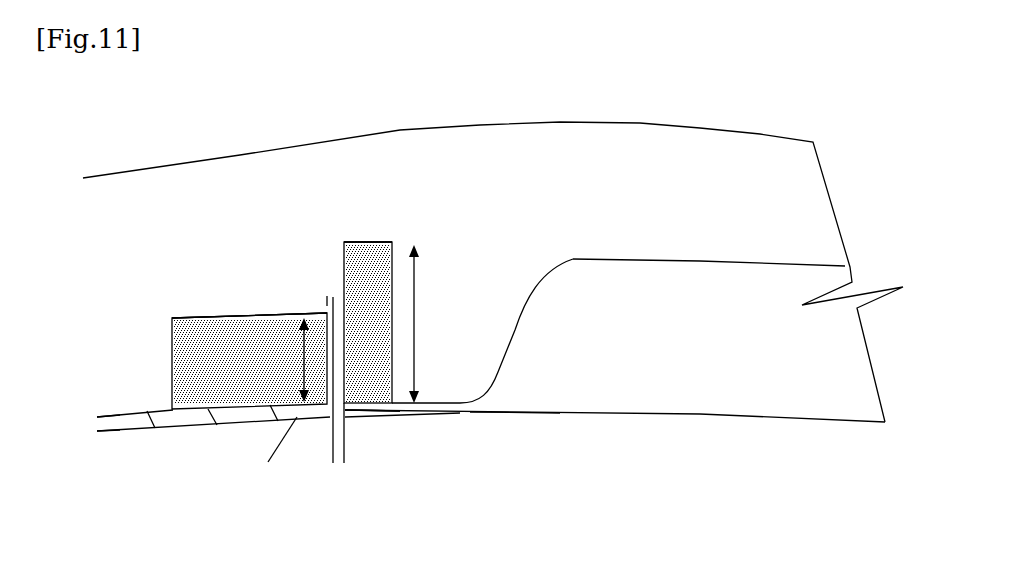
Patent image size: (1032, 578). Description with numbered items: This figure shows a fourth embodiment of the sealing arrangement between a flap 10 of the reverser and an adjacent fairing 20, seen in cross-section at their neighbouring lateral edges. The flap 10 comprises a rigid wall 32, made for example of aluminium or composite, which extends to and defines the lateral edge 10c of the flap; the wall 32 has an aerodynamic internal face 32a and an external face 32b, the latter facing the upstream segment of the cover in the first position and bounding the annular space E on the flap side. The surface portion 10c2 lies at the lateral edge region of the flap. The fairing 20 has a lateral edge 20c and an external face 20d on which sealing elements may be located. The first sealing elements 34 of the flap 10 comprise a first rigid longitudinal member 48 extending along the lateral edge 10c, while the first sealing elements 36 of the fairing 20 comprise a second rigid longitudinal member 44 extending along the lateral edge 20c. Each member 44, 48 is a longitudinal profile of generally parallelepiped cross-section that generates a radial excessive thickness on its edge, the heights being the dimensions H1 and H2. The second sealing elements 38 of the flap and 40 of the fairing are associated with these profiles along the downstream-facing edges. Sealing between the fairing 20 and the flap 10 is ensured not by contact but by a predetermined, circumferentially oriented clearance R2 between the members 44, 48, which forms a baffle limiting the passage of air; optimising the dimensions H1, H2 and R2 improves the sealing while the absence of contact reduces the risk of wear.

The flap 10 is at (695, 444).
The lateral edge 10c is at (355, 413).
The surface portion of panel 10c2 is at (412, 472).
The fairing 20 is at (136, 443).
The lateral edge 20c is at (330, 420).
The external face 20d is at (107, 417).
The rigid wall 32 is at (578, 392).
The aerodynamic internal face 32a is at (505, 414).
The external face 32b is at (468, 392).
The first sealing element 34 is at (396, 232).
The second sealing element 38 is at (427, 194).
The first sealing element 36 is at (266, 298).
The second sealing element 40 is at (249, 240).
The second rigid longitudinal member 44 is at (213, 328).
The first rigid longitudinal member 48 is at (355, 242).
The dimension H1 is at (290, 368).
The dimension H2 is at (416, 273).
The clearance R2 is at (330, 298).
The annular space E is at (598, 192).